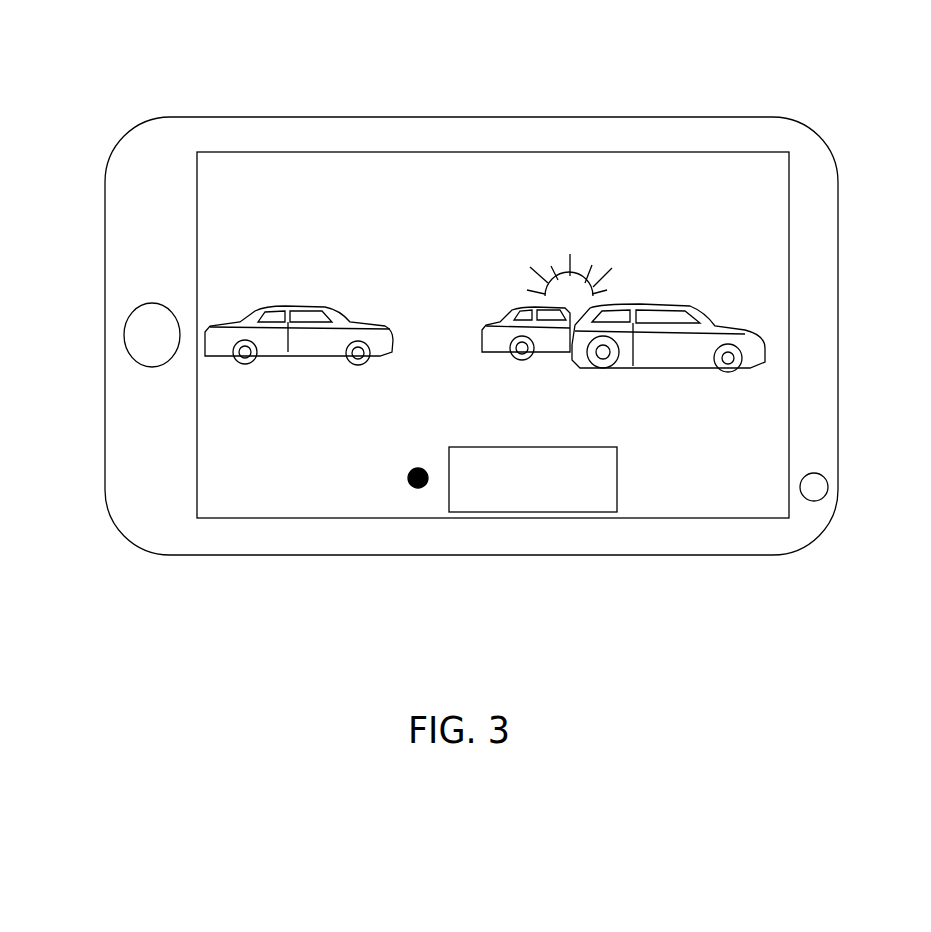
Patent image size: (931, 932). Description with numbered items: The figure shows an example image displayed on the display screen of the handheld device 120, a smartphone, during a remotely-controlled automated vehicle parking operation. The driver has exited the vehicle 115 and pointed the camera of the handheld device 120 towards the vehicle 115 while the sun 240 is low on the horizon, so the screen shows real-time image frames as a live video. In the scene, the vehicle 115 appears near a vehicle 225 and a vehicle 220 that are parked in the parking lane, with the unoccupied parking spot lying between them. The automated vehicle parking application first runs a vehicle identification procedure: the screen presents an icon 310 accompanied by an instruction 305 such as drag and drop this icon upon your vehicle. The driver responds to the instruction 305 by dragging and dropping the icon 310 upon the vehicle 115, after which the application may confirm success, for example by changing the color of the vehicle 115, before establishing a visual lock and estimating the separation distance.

The handheld device 120 is at (110, 112).
The vehicle 115 is at (497, 305).
The vehicle 220 is at (335, 313).
The vehicle 225 is at (712, 315).
The sun 240 is at (540, 250).
The instruction 305 is at (628, 460).
The icon 310 is at (405, 466).